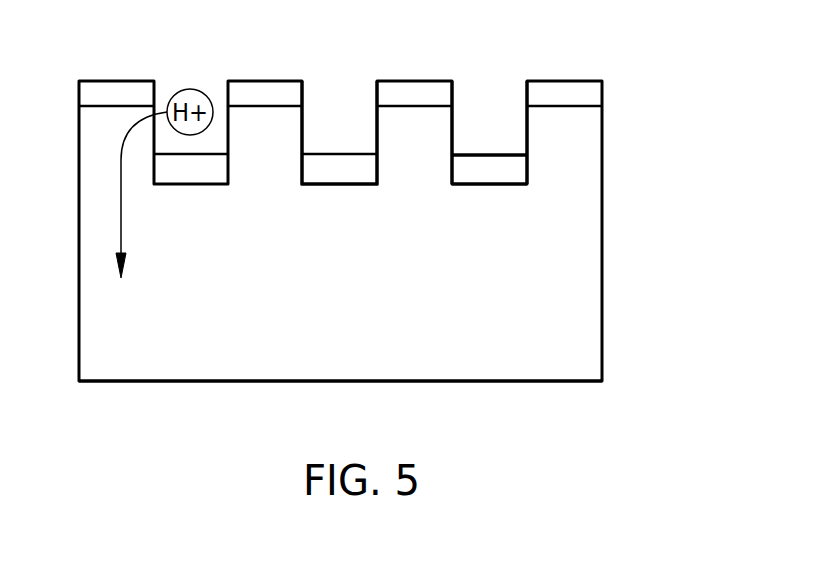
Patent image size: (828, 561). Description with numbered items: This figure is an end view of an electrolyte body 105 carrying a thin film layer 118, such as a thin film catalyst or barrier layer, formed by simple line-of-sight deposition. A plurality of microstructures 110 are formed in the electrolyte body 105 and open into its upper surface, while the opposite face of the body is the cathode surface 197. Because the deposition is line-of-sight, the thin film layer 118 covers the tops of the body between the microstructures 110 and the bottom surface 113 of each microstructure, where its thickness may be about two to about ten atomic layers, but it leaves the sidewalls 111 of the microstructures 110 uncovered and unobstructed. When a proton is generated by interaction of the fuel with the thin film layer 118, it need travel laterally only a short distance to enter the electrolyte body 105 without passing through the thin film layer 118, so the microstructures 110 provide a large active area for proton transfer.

The electrolyte body 105 is at (551, 302).
The microstructures 110 is at (302, 70).
The sidewalls 111 is at (527, 142).
The bottom surface 113 is at (502, 188).
The thin film layer 118 is at (586, 97).
The cathode surface 197 is at (147, 381).